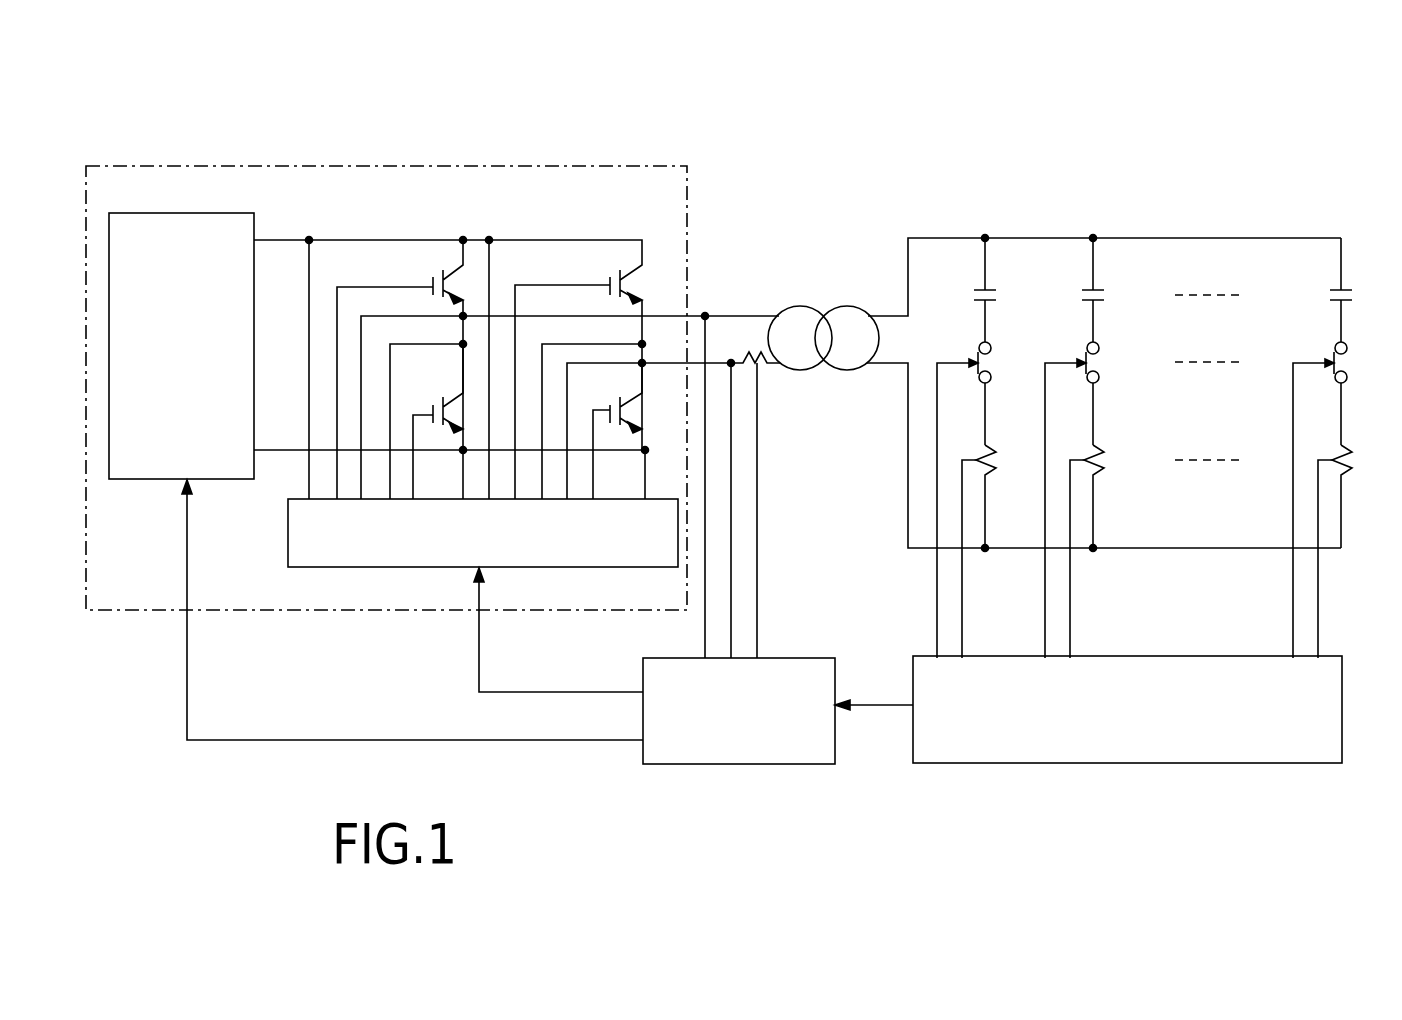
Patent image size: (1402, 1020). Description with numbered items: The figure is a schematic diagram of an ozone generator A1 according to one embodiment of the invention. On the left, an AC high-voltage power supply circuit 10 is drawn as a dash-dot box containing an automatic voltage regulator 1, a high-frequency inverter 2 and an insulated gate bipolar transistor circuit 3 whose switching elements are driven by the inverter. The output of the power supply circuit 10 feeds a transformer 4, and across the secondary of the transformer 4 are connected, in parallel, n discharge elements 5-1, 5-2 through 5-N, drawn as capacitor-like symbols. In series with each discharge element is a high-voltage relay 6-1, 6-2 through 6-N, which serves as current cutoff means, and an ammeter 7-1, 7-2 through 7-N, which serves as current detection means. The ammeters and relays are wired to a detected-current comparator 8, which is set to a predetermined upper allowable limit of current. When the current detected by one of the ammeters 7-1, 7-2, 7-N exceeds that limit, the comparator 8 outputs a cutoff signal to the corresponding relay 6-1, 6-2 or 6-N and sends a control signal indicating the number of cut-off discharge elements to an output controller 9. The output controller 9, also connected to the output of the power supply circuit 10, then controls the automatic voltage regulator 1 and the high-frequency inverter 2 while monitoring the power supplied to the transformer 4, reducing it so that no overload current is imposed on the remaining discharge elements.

The automatic voltage regulator 1 is at (238, 213).
The high-frequency inverter 2 is at (590, 567).
The insulated gate bipolar transistor (IGBT) circuit 3 is at (456, 228).
The transformer 4 is at (836, 307).
The discharge element 5-1 is at (987, 280).
The discharge element 5-2 is at (1095, 280).
The discharge element 5-N is at (1343, 280).
The high-voltage relay 6-1 is at (989, 363).
The high-voltage relay 6-2 is at (1097, 363).
The high-voltage relay 6-N is at (1345, 363).
The ammeter 7-1 is at (996, 462).
The ammeter 7-2 is at (1104, 462).
The ammeter 7-N is at (1352, 462).
The detected-current comparator 8 is at (1198, 765).
The output controller 9 is at (745, 765).
The AC high-voltage power supply circuit 10 is at (562, 166).
The ozone generator A1 is at (902, 163).